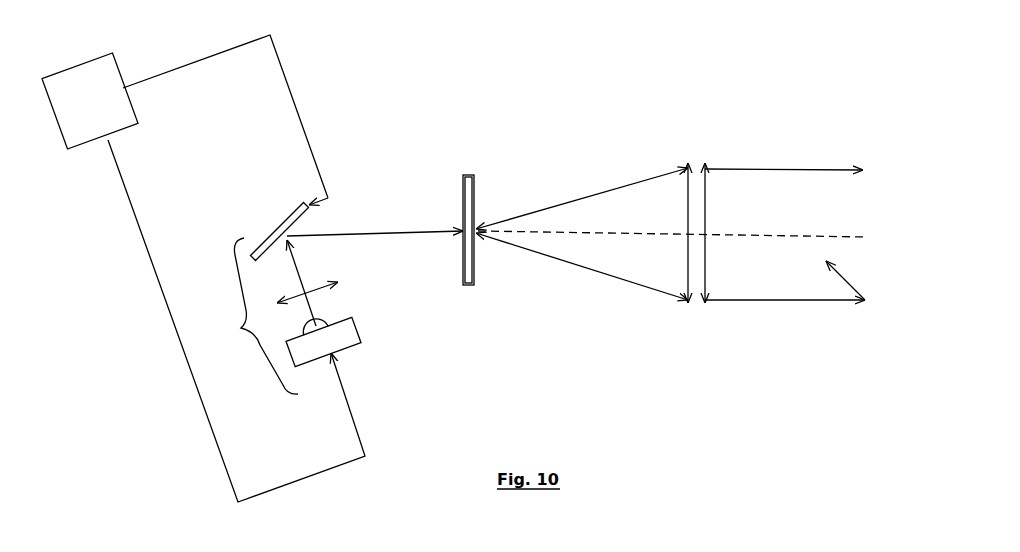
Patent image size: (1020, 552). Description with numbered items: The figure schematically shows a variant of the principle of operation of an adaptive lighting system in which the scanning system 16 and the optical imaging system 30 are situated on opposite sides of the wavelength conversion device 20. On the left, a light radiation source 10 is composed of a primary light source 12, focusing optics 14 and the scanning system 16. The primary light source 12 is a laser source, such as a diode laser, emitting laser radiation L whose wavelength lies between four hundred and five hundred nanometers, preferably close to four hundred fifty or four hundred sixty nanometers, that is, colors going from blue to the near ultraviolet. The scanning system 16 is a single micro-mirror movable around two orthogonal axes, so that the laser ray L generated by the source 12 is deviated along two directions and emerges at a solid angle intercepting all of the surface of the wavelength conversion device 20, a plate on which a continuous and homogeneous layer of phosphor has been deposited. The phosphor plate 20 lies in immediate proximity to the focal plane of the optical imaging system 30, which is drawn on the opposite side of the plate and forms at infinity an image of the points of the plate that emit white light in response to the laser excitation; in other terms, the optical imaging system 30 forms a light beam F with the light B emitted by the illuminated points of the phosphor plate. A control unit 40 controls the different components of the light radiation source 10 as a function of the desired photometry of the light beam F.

The light radiation source 10 is at (257, 316).
The primary light source 12 is at (358, 332).
The focusing optics 14 is at (339, 283).
The scanning system 16 is at (262, 243).
The wavelength conversion device 20 is at (456, 235).
The optical imaging system 30 is at (698, 313).
The control unit 40 is at (117, 63).
The laser radiation L is at (390, 233).
The light emitted by the phosphor plate B is at (565, 262).
The light beam F is at (865, 300).